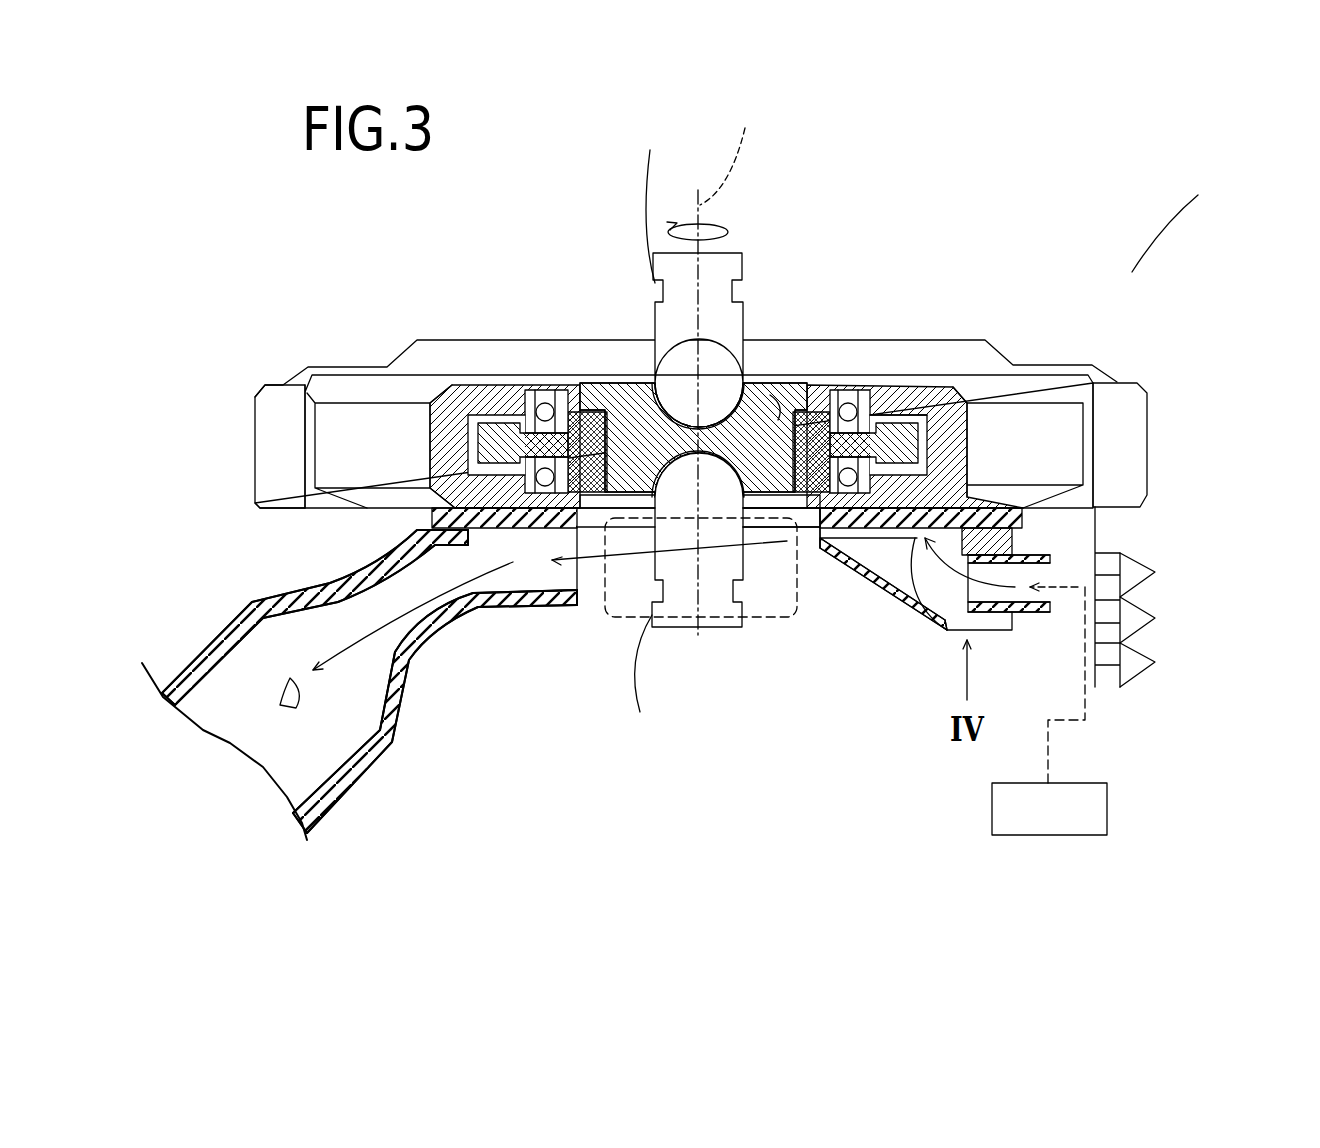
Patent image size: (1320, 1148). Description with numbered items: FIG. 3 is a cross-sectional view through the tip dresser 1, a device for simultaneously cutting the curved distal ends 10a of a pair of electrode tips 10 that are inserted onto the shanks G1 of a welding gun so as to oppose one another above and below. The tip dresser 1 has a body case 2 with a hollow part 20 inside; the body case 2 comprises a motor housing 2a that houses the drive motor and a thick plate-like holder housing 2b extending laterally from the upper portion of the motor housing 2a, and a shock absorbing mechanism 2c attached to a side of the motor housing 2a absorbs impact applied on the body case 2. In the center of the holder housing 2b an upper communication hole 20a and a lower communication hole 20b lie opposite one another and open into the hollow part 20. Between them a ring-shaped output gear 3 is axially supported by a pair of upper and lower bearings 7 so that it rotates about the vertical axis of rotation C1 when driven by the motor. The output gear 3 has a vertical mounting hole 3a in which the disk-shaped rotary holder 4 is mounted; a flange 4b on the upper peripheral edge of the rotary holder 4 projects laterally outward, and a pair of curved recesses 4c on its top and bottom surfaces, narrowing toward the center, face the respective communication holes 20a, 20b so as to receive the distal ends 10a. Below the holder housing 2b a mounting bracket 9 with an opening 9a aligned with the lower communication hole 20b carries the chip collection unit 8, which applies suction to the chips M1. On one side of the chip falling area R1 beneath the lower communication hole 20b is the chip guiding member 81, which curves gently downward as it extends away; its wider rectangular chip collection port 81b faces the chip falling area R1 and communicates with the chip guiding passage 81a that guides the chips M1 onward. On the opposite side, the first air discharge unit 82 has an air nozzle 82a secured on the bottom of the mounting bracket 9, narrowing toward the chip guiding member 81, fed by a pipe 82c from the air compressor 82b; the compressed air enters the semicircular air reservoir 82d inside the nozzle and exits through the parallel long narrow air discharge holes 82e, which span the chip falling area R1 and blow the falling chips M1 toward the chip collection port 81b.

The tip dresser 1 is at (1177, 219).
The body case 2 is at (683, 366).
The motor housing 2a is at (1157, 635).
The holder housing 2b is at (231, 432).
The shock absorbing mechanism 2c is at (1175, 468).
The output gear 3 is at (954, 415).
The mounting hole 3a is at (813, 344).
The rotary holder 4 is at (685, 376).
The flange 4b is at (505, 369).
The curved recesses 4c is at (691, 362).
The bearings 7 is at (697, 380).
The chip collection unit 8 is at (224, 663).
The mounting bracket 9 is at (557, 555).
The opening 9a is at (879, 620).
The electrode tips 10 is at (670, 435).
The curved distal ends 10a is at (768, 330).
The hollow part 20 is at (951, 373).
The upper communication hole 20a is at (904, 339).
The lower communication hole 20b is at (802, 636).
The chip guiding member 81 is at (364, 681).
The chip guiding passage 81a is at (435, 701).
The chip collection port 81b is at (574, 687).
The first air discharge unit 82 is at (932, 767).
The air nozzle 82a is at (1018, 632).
The air compressor 82b is at (1059, 849).
The pipe 82c is at (1135, 706).
The air reservoir 82d is at (1015, 535).
The air discharge holes 82e is at (916, 606).
The axis of rotation C1 is at (731, 144).
The shanks G1 is at (651, 429).
The chip falling area R1 is at (701, 661).
The chips M1 is at (367, 761).